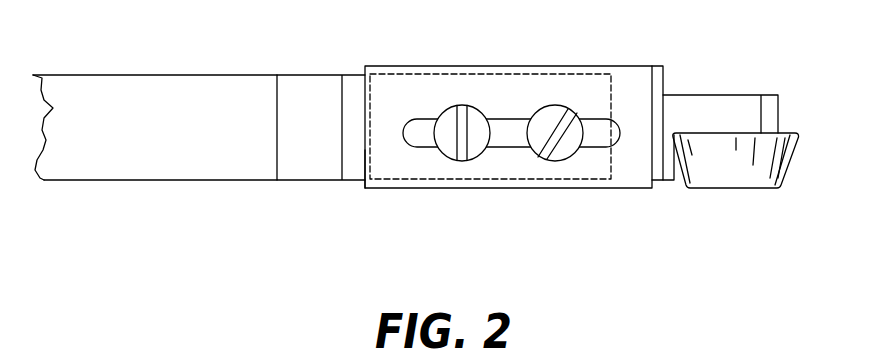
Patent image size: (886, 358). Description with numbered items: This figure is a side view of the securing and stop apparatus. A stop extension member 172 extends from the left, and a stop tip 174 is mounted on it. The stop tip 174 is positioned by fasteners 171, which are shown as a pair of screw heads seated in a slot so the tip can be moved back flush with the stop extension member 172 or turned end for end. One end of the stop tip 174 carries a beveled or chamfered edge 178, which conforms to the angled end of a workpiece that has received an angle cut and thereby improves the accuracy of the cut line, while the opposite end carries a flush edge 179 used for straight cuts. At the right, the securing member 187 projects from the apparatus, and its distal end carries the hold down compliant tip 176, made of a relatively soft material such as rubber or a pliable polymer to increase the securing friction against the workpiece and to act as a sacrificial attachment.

The fasteners 171 is at (555, 160).
The stop extension member 172 is at (148, 80).
The stop tip 174 is at (417, 89).
The hold down compliant tip 176 is at (738, 190).
The beveled or chamfered edge 178 is at (365, 163).
The flush edge 179 is at (661, 68).
The securing member 187 is at (730, 103).